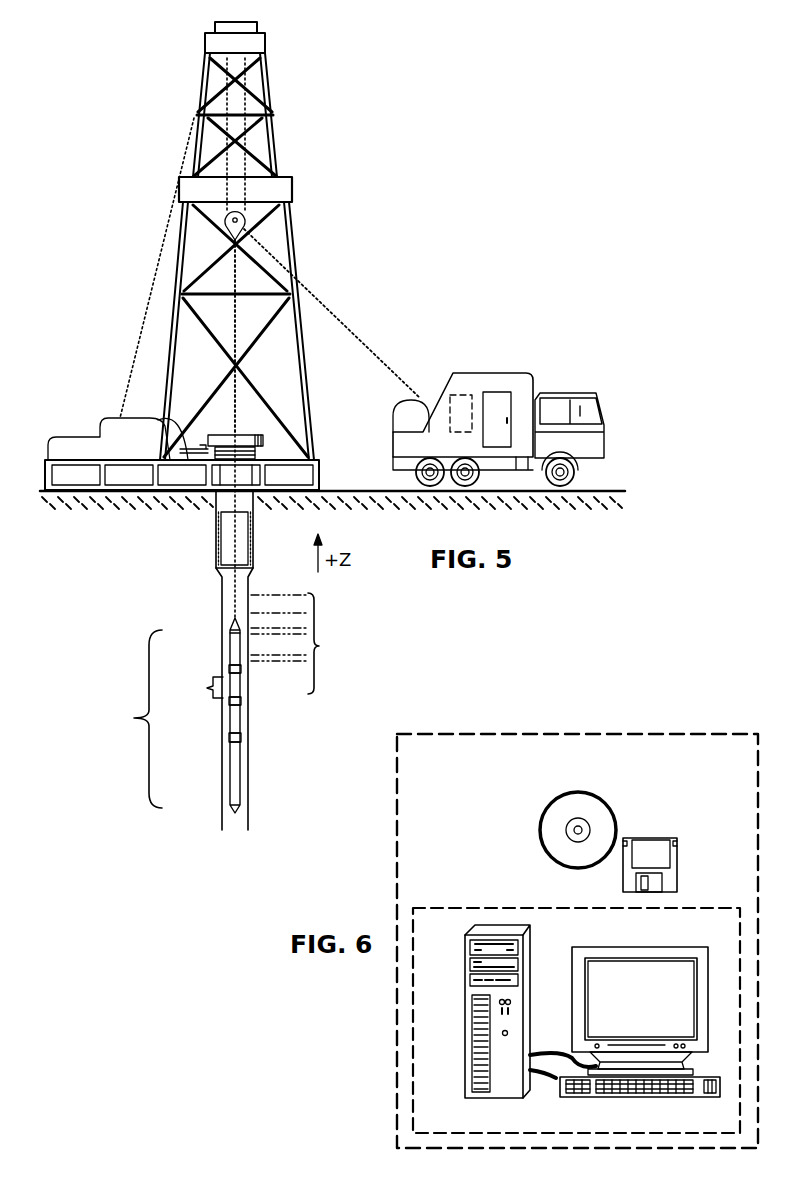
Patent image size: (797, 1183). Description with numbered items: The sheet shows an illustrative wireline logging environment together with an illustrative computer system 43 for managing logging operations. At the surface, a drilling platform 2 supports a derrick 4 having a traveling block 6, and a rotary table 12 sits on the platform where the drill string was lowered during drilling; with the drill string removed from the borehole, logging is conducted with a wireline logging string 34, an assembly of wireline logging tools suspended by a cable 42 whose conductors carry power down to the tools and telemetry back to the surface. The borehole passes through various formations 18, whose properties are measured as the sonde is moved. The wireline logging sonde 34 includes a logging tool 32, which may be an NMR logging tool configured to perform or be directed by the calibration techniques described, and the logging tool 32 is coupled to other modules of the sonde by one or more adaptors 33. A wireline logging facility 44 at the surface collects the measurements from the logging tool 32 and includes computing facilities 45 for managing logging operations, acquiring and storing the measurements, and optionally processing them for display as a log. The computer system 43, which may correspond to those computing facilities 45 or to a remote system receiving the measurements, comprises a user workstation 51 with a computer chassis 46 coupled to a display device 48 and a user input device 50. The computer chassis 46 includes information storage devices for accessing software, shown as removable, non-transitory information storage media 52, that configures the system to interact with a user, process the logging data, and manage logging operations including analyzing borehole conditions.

In FIG. 5, the drilling platform 2 is at (319, 473).
In FIG. 5, the derrick 4 is at (307, 424).
In FIG. 5, the traveling block 6 is at (243, 221).
In FIG. 5, the rotary table 12 is at (252, 433).
In FIG. 5, the formations 18 is at (302, 643).
In FIG. 5, the logging tool 32 is at (205, 683).
In FIG. 5, the adaptors 33 is at (239, 668).
In FIG. 5, the wireline logging string 34 is at (169, 526).
In FIG. 5, the cable 42 is at (331, 277).
In FIG. 5, the wireline logging facility 44 is at (527, 378).
In FIG. 5, the computing facilities 45 is at (455, 398).
In FIG. 6, the computer system 43 is at (744, 775).
In FIG. 6, the computer chassis 46 is at (530, 1032).
In FIG. 6, the display device 48 is at (697, 1052).
In FIG. 6, the user input device 50 is at (702, 1098).
In FIG. 6, the user workstation 51 is at (455, 951).
In FIG. 6, the removable non-transitory information storage media 52 is at (637, 838).